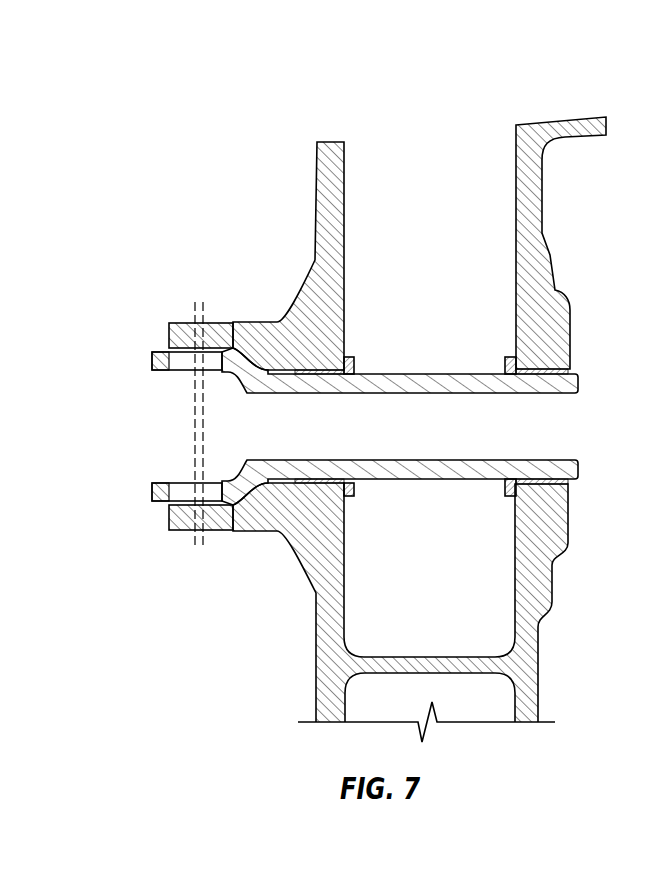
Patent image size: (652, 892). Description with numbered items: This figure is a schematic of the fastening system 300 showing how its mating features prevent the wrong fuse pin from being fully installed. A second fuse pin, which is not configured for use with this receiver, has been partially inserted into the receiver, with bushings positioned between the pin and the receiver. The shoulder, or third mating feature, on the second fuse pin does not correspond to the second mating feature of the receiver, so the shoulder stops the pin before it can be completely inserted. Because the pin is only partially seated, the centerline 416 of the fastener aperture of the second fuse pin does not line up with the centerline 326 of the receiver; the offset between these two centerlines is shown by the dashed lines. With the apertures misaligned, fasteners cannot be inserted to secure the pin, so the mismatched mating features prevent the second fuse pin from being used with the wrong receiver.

The fastening system 300 is at (171, 133).
The centerline of the receiver 326 is at (194, 463).
The centerline of the fastener aperture 416 is at (194, 413).